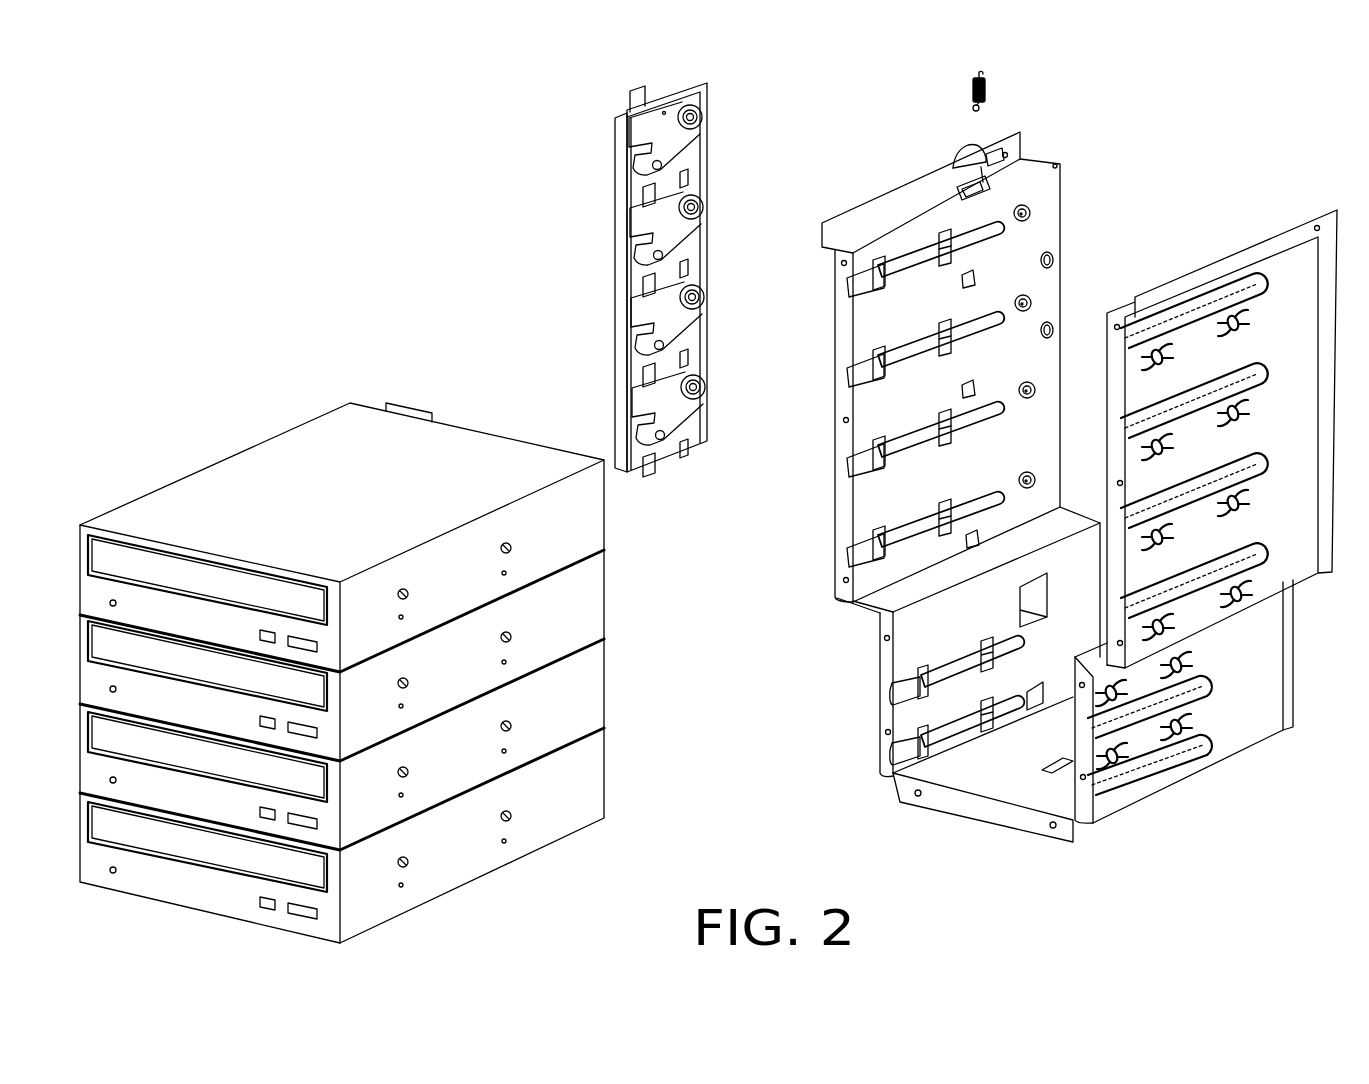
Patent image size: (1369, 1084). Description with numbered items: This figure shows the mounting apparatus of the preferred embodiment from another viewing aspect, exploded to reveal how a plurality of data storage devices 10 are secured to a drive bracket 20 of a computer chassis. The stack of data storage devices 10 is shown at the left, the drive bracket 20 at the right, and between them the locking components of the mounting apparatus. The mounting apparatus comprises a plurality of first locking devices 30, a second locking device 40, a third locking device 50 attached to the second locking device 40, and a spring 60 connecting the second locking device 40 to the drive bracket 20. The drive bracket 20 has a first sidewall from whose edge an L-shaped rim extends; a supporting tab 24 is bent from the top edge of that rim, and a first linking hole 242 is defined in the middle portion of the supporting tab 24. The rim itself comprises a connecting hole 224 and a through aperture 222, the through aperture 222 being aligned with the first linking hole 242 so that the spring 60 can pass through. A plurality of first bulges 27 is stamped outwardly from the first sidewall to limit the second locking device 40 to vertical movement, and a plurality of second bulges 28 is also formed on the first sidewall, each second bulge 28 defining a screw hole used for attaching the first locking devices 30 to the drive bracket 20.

The data storage devices 10 is at (271, 493).
The drive bracket 20 is at (1047, 453).
The supporting tab 24 is at (961, 144).
The first bulges 27 is at (1054, 260).
The second bulges 28 is at (1032, 212).
The first locking devices 30 is at (648, 280).
The second locking device 40 is at (647, 284).
The third locking device 50 is at (618, 147).
The spring 60 is at (968, 86).
The through aperture 222 is at (990, 152).
The connecting hole 224 is at (963, 190).
The first linking hole 242 is at (975, 150).